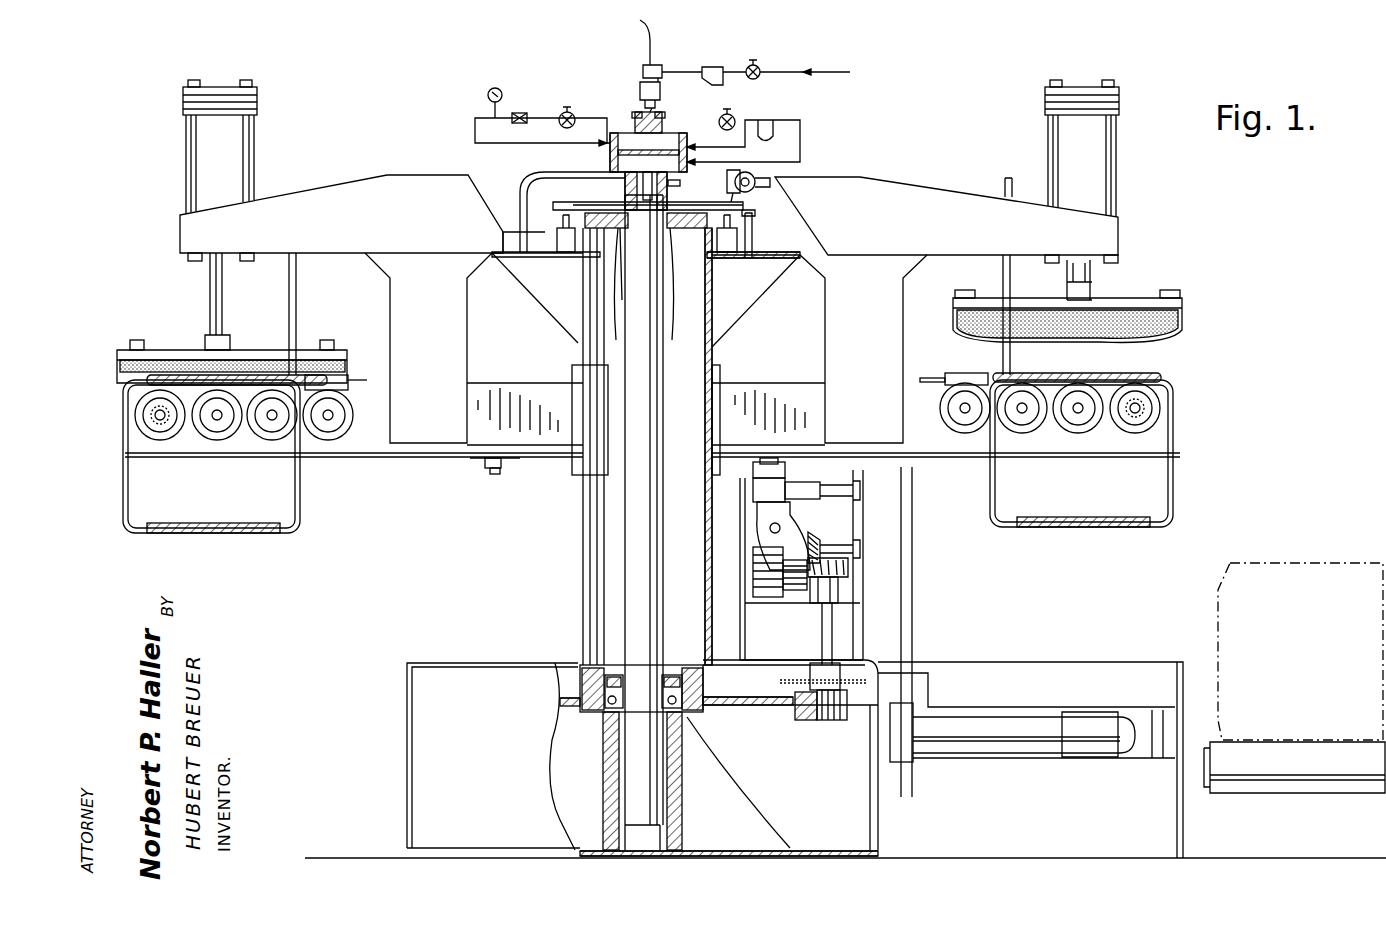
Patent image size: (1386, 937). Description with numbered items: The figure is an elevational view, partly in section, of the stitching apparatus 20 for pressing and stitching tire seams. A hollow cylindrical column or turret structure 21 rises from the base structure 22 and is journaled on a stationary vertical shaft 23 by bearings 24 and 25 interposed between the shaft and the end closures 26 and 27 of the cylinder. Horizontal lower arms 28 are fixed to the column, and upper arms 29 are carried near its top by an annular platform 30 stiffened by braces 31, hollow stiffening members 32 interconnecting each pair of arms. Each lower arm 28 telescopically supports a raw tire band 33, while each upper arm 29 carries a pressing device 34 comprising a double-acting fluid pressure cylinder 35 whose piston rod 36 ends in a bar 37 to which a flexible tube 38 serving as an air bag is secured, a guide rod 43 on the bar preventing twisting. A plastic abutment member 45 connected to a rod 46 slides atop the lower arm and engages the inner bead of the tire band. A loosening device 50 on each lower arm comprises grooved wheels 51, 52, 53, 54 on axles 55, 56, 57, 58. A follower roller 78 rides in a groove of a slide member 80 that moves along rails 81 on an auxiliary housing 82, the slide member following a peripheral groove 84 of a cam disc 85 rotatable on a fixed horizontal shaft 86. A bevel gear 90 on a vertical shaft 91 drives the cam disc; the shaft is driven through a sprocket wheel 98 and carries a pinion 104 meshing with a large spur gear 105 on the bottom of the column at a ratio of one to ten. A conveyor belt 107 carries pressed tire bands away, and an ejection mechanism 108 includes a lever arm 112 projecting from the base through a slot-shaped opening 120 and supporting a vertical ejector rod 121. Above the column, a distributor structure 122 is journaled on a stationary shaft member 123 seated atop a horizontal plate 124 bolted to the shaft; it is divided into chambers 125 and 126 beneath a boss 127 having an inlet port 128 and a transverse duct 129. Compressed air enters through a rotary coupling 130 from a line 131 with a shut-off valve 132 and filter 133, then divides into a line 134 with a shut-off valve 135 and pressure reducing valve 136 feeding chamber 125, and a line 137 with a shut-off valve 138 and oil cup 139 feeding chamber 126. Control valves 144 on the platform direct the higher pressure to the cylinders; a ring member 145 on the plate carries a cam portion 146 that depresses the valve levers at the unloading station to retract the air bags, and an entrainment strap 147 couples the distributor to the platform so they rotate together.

The stitching apparatus 20 is at (408, 93).
The column or turret structure 21 is at (583, 534).
The base structure 22 is at (445, 663).
The vertical stationary post or shaft 23 is at (625, 608).
The bearing 24 is at (672, 250).
The bearing 25 is at (605, 708).
The end closure 26 is at (603, 226).
The end closure 27 is at (585, 667).
The lower arm 28 is at (527, 388).
The upper arm 29 is at (325, 200).
The annular platform 30 is at (510, 266).
The brace 31 is at (768, 278).
The hollow stiffening member 32 is at (467, 318).
The raw tire 33 is at (302, 505).
The pressing device 34 is at (195, 335).
The double-acting fluid pressure cylinder 35 is at (208, 152).
The piston rod 36 is at (208, 284).
The crosshead or bar 37 is at (1062, 282).
The flexible tube 38 is at (117, 360).
The guide rod 43 is at (298, 281).
The abutment member 45 is at (340, 375).
The rod 46 is at (355, 378).
The loosening device 50 is at (365, 398).
The grooved wheel 51 is at (147, 403).
The grooved wheel 52 is at (1080, 413).
The grooved wheel 53 is at (1024, 413).
The grooved wheel 54 is at (940, 408).
The axle 55 is at (158, 415).
The axle 56 is at (217, 420).
The axle 57 is at (272, 420).
The axle 58 is at (328, 420).
The follower roller 78 is at (495, 474).
The slide member 80 is at (786, 480).
The rails 81 is at (852, 482).
The auxiliary housing or framework 82 is at (863, 500).
The peripheral groove 84 is at (780, 522).
The cam disc 85 is at (768, 597).
The fixed horizontal shaft 86 is at (853, 540).
The bevel gear 90 is at (848, 567).
The vertical shaft 91 is at (832, 626).
The sprocket wheel 98 is at (810, 680).
The pinion or small spur gear 104 is at (835, 720).
The large spur gear 105 is at (795, 720).
The conveyor belt 107 is at (1297, 793).
The ejection mechanism 108 is at (935, 650).
The lever arm 112 is at (1010, 740).
The slot-shaped opening 120 is at (1003, 710).
The ejector rod 121 is at (912, 533).
The distributor structure 122 is at (688, 145).
The stationary vertical shaft member 123 is at (617, 180).
The horizontal plate 124 is at (695, 205).
The chamber 125 is at (667, 128).
The chamber 126 is at (617, 162).
The boss 127 is at (640, 113).
The axial inlet port 128 is at (660, 114).
The transverse bore or duct 129 is at (618, 130).
The rotary coupling 130 is at (650, 55).
The line 131 is at (792, 72).
The shut-off valve 132 is at (756, 64).
The filter 133 is at (712, 66).
The line 134 is at (475, 128).
The shut-off valve 135 is at (560, 112).
The pressure reducing valve 136 is at (519, 113).
The line 137 is at (800, 137).
The shut-off valve 138 is at (735, 116).
The air lubricator or oil cup 139 is at (775, 130).
The control valve 144 is at (565, 253).
The ring member 145 is at (503, 232).
The cam portion 146 is at (725, 240).
The entrainment strap 147 is at (520, 215).